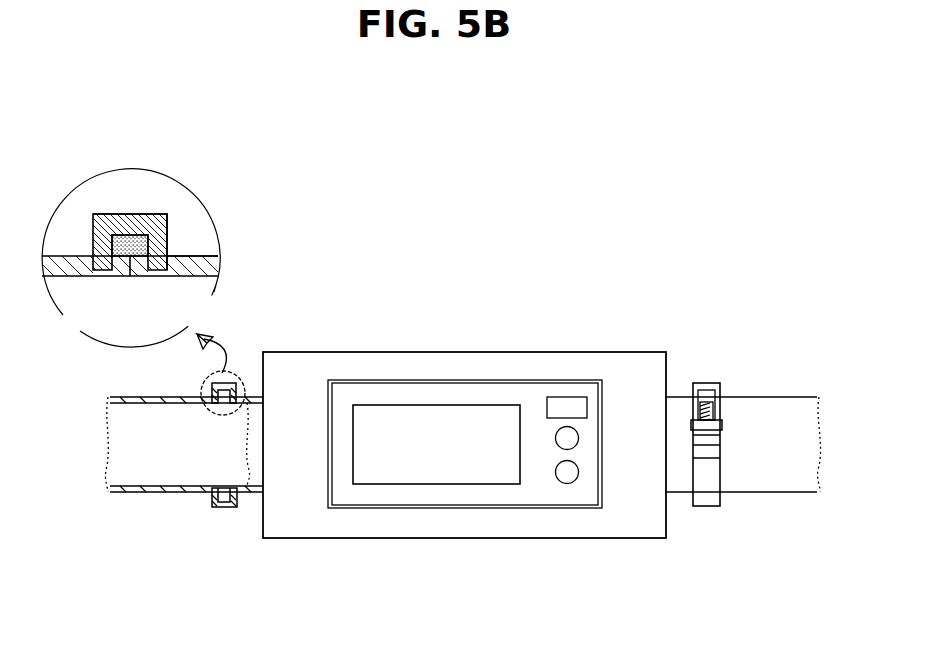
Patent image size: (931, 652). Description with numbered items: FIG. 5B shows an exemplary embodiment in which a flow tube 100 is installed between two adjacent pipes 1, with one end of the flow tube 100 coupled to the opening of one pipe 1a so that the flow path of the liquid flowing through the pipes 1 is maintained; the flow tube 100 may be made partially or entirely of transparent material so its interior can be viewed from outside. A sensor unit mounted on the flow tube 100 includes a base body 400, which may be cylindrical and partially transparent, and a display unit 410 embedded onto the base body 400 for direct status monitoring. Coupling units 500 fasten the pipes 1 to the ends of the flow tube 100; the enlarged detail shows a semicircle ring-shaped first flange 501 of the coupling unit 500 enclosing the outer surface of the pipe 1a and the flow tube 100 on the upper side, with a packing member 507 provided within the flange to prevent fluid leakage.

The pipes 1 is at (165, 495).
The pipe 1a is at (67, 257).
The flow tube 100 is at (187, 257).
The base body 400 is at (517, 525).
The display unit 410 is at (422, 494).
The coupling unit 500 is at (101, 206).
The first flange 501 is at (148, 222).
The packing member 507 is at (118, 236).